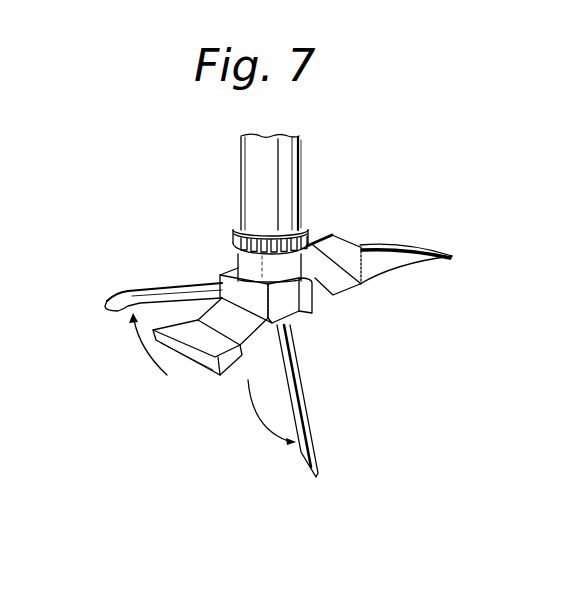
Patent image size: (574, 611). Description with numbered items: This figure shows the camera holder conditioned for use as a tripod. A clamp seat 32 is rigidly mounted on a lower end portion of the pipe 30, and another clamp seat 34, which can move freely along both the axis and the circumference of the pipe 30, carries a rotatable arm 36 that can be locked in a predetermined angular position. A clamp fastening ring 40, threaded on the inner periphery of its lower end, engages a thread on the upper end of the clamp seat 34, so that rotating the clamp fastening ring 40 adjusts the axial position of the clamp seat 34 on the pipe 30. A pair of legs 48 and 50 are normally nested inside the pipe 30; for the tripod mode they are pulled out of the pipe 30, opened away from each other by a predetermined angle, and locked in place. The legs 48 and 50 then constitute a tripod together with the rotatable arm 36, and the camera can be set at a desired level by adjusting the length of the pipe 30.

The pipe 30 is at (300, 188).
The clamp fastening ring 40 is at (234, 234).
The clamp seat 34 is at (338, 300).
The rotatable arm 36 is at (400, 262).
The leg 50 is at (150, 291).
The clamp seat 32 is at (203, 374).
The leg 48 is at (303, 389).